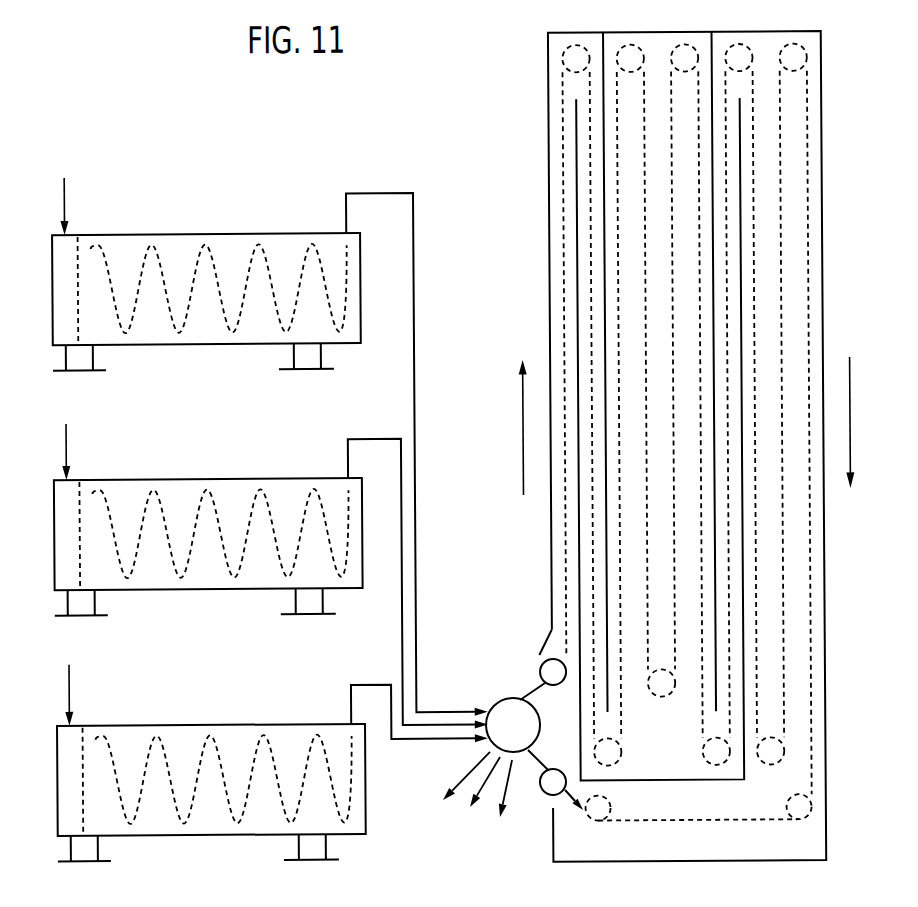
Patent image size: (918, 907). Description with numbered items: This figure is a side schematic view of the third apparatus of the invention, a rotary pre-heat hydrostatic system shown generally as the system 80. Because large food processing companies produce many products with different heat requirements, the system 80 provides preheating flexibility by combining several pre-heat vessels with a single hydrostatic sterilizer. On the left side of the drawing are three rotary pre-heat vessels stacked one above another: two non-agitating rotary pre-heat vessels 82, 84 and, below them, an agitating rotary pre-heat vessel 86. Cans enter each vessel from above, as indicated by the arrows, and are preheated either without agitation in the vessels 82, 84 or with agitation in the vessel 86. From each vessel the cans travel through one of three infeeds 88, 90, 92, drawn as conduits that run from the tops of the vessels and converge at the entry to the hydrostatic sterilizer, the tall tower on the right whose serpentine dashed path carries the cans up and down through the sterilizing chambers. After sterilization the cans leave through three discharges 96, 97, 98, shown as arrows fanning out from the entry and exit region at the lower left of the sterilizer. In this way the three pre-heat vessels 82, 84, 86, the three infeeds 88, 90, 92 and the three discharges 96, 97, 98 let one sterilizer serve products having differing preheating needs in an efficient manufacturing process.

The system 80 is at (455, 118).
The non-agitating rotary pre-heat vessel 82 is at (50, 274).
The non-agitating rotary pre-heat vessel 84 is at (51, 522).
The agitating rotary pre-heat vessel 86 is at (52, 776).
The infeed 88 is at (412, 252).
The infeed 90 is at (398, 470).
The infeed 92 is at (346, 692).
The discharge 96 is at (457, 790).
The discharge 97 is at (482, 800).
The discharge 98 is at (507, 800).